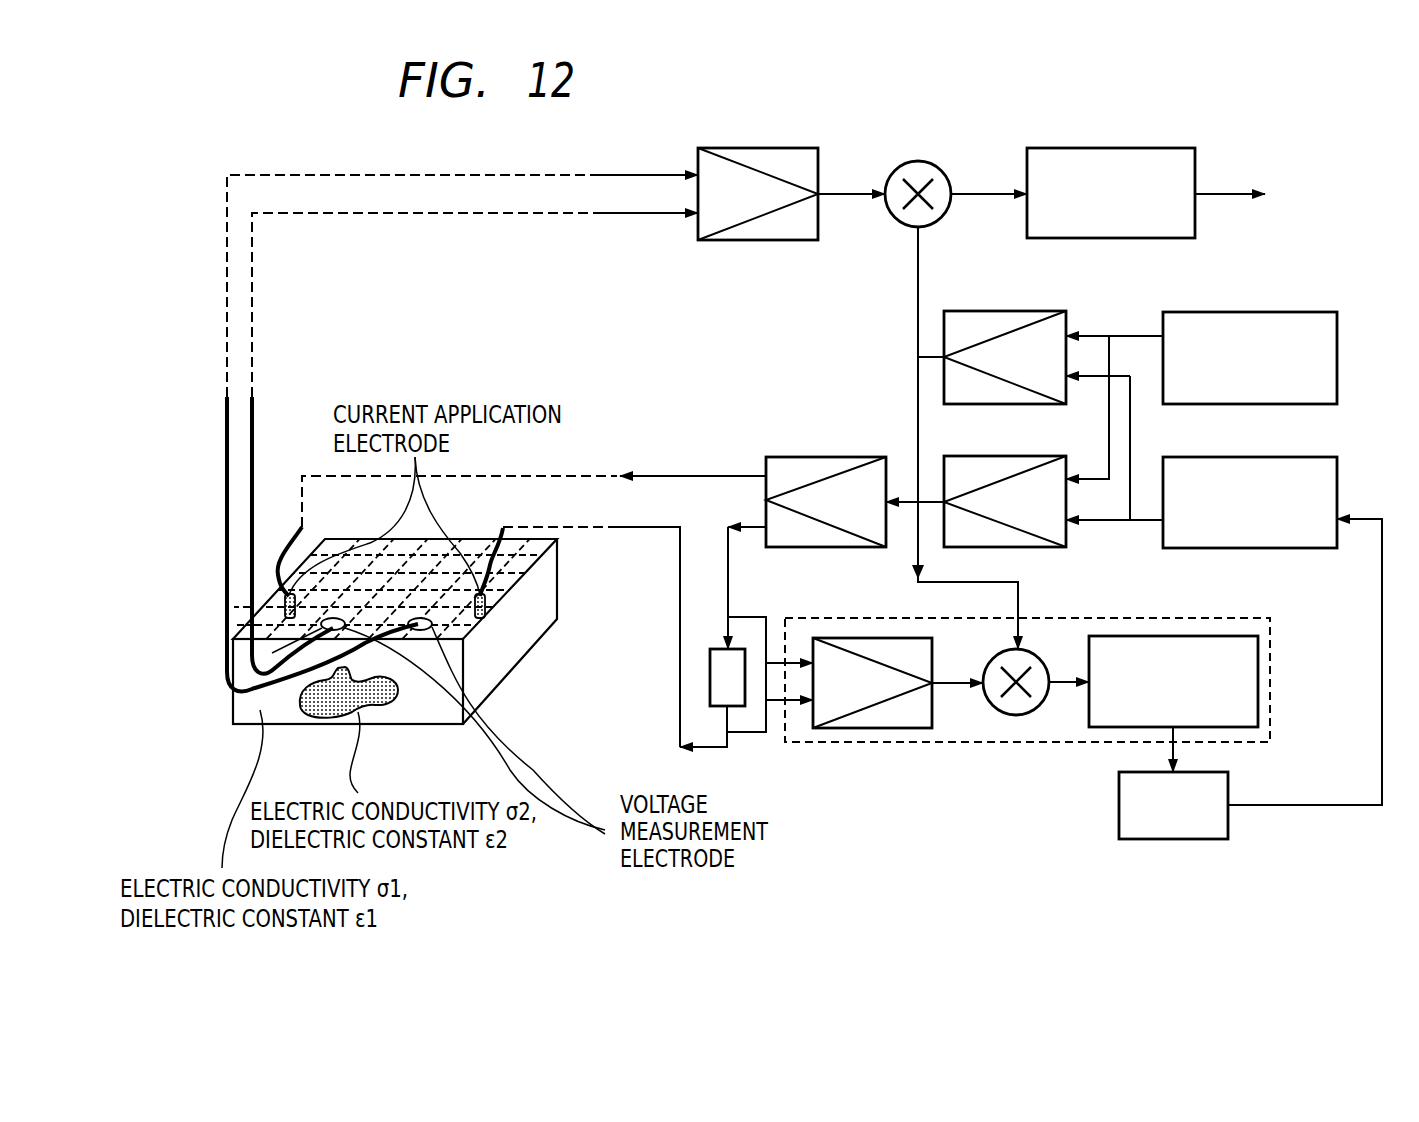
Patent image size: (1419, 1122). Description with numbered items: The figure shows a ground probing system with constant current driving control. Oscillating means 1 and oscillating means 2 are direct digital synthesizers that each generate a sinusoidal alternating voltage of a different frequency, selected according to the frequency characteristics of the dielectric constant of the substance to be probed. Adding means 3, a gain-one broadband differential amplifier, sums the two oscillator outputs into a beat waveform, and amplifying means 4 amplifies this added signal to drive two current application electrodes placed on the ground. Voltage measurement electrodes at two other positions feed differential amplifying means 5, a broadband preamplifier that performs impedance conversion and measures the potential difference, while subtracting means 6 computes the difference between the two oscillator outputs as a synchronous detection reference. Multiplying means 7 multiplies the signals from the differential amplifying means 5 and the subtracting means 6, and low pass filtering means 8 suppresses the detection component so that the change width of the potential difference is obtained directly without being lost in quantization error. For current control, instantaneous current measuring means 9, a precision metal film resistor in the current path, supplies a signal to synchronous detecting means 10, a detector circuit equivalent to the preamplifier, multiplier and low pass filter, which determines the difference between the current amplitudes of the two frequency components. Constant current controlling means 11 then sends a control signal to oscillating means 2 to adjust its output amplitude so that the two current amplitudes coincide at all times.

The oscillating means 1 is at (1280, 312).
The oscillating means 2 is at (1283, 457).
The adding means 3 is at (1040, 548).
The amplifying means 4 is at (846, 457).
The differential amplifying means 5 is at (789, 148).
The subtracting means 6 is at (1030, 311).
The multiplying means 7 is at (925, 162).
The low pass filtering means 8 is at (1150, 148).
The instantaneous current measuring means 9 is at (710, 672).
The synchronous detecting means 10 is at (1000, 742).
The constant current controlling means 11 is at (1185, 839).